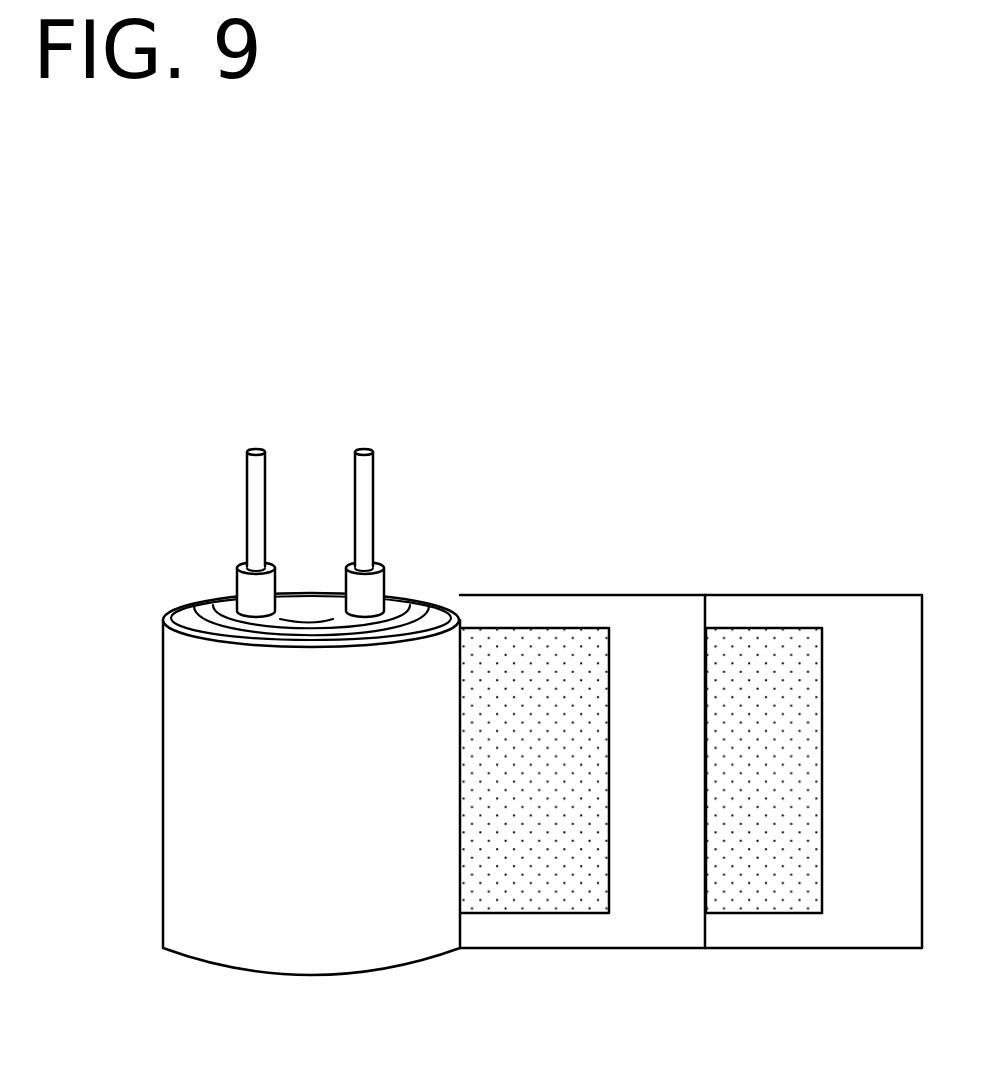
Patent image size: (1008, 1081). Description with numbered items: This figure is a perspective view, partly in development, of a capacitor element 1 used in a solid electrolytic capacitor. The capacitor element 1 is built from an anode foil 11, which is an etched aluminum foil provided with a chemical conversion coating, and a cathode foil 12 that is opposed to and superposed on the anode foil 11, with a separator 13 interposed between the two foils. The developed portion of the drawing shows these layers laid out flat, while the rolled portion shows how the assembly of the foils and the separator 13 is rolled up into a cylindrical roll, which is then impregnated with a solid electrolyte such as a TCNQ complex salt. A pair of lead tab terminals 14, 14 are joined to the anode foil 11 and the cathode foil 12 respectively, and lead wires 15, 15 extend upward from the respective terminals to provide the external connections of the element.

The capacitor element 1 is at (777, 411).
The anode foil 11 is at (778, 638).
The cathode foil 12 is at (565, 638).
The separator 13 is at (663, 605).
The lead tab terminal 14 is at (238, 583).
The lead wire 15 is at (249, 477).